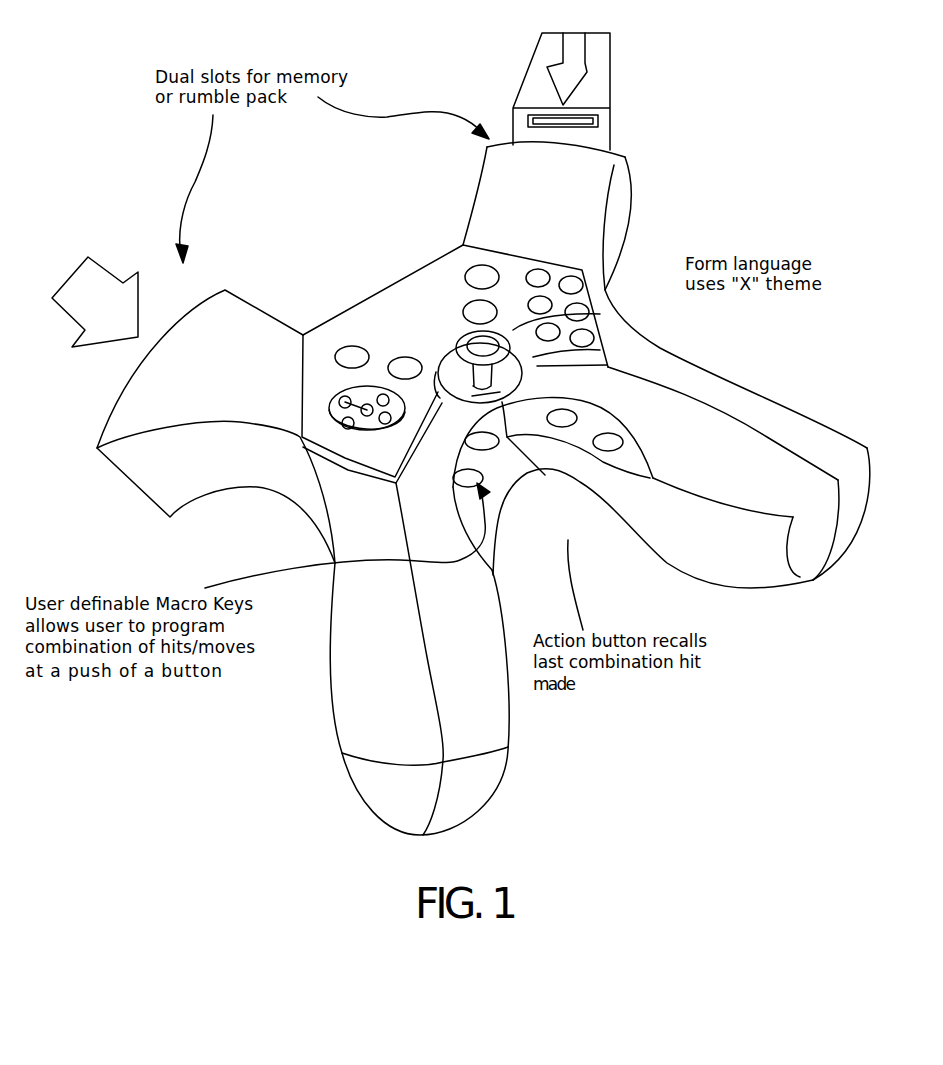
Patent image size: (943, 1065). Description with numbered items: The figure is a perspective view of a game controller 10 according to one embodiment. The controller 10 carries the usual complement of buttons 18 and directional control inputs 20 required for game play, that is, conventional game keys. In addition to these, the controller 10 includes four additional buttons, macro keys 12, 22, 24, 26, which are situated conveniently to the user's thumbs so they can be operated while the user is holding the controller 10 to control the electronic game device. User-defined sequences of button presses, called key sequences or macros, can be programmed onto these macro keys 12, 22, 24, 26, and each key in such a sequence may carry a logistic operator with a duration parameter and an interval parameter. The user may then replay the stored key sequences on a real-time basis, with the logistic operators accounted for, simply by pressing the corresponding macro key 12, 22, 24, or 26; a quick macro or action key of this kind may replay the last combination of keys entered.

The game controller 10 is at (257, 750).
The macro key 12 is at (305, 567).
The buttons 18 is at (600, 314).
The directional control inputs 20 is at (345, 402).
The macro key 22 is at (490, 443).
The macro key 24 is at (557, 427).
The macro key 26 is at (605, 450).